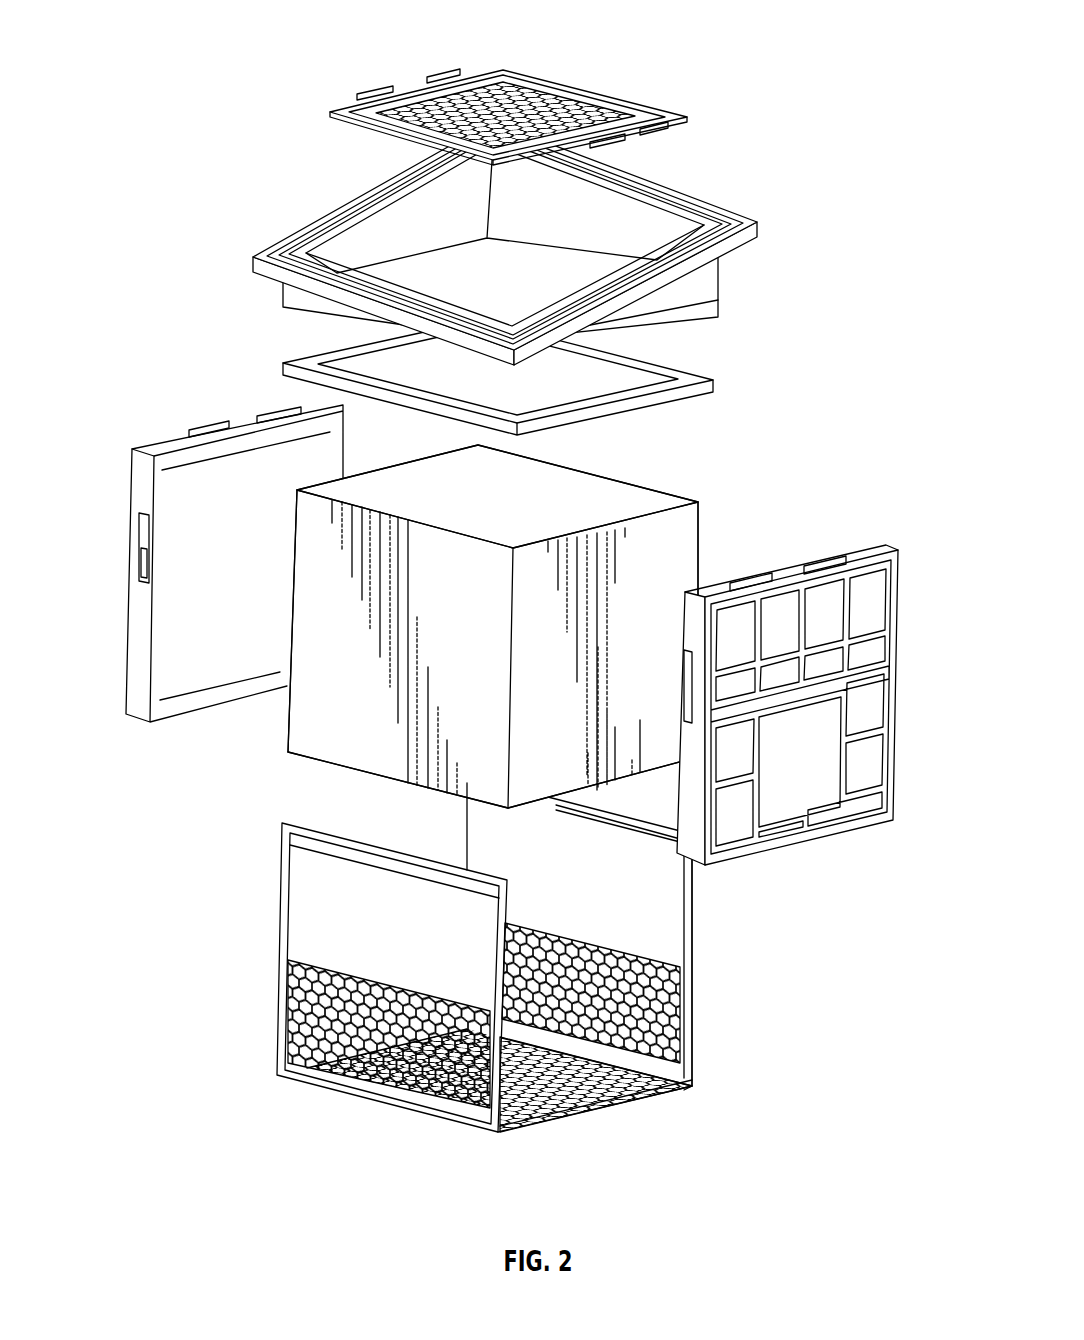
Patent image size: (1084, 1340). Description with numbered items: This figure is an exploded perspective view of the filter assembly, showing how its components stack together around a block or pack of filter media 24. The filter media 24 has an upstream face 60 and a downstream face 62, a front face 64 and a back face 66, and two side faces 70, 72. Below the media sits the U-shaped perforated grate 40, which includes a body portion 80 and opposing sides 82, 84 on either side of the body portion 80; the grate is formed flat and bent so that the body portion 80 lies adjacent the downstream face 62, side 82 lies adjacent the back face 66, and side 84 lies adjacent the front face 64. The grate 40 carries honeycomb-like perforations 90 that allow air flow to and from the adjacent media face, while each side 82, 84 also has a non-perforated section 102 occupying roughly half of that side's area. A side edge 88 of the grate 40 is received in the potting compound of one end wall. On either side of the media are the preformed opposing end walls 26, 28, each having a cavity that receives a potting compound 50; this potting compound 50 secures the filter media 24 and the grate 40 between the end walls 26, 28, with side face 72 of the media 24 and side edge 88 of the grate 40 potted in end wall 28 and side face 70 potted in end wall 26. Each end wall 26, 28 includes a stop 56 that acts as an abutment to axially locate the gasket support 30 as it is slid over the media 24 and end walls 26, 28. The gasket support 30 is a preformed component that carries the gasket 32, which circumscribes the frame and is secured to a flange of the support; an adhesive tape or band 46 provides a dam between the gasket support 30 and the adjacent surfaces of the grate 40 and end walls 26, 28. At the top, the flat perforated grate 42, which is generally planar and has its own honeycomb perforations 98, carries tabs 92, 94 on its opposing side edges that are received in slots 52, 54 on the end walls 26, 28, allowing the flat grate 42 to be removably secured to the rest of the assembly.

The filter media 24 is at (675, 563).
The end wall 26 is at (878, 777).
The end wall 28 is at (134, 677).
The gasket support 30 is at (712, 280).
The gasket 32 is at (759, 226).
The U-shaped perforated grate 40 is at (621, 1109).
The flat perforated grate 42 is at (690, 116).
The adhesive tape or band 46 is at (712, 385).
The potting compound 50 is at (193, 694).
The slot 52 is at (275, 410).
The slot 54 is at (209, 428).
The stop 56 is at (143, 595).
The upstream face 60 is at (637, 497).
The downstream face 62 is at (528, 805).
The front face 64 is at (317, 744).
The back face 66 is at (702, 527).
The side face 70 is at (678, 538).
The side face 72 is at (287, 557).
The body portion 80 is at (693, 1003).
The side 82 is at (692, 1050).
The side 84 is at (480, 1130).
The side edge 88 is at (280, 1005).
The perforations 90 is at (320, 1050).
The tab 92 is at (442, 76).
The tab 94 is at (362, 93).
The perforations 98 is at (590, 95).
The non-perforated section 102 is at (280, 950).